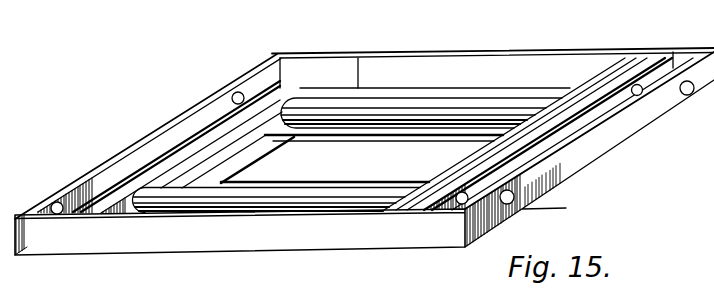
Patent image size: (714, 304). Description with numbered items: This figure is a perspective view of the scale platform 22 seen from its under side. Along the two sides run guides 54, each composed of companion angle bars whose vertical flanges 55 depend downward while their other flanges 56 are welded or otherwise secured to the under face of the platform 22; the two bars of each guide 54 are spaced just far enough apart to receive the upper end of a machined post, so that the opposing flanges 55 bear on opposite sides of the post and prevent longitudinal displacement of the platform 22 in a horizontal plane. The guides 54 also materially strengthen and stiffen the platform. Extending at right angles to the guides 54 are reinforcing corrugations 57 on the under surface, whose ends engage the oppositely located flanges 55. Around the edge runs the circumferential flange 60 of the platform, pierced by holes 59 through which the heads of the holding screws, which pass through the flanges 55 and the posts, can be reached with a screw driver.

The platform 22 is at (362, 158).
The guides 54 is at (333, 57).
The vertical flanges 55 is at (218, 138).
The other flanges 56 is at (253, 163).
The reinforcing corrugations 57 is at (392, 103).
The holes 59 is at (51, 202).
The circumferential flange 60 is at (112, 157).